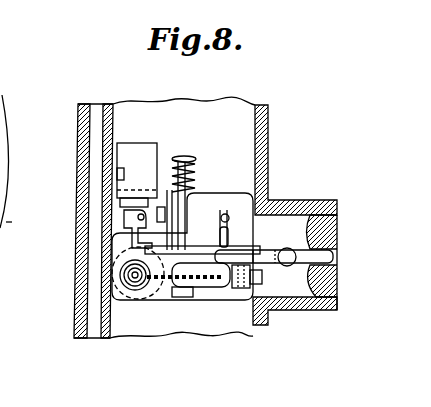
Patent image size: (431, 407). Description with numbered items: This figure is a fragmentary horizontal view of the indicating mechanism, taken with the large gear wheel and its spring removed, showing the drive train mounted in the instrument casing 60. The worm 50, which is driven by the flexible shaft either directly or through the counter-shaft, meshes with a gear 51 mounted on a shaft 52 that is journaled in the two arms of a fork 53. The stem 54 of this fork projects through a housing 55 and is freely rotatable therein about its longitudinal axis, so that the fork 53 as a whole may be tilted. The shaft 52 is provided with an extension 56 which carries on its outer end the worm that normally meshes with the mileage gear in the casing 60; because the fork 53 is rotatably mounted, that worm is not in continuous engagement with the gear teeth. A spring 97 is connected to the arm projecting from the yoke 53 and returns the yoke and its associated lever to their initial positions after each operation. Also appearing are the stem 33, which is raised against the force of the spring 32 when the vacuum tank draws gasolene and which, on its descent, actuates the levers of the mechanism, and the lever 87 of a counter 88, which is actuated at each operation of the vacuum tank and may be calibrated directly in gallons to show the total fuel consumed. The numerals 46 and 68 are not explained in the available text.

The adjacent figure fragment 46 is at (0, 44).
The machine frame wall 68 is at (82, 267).
The instrument casing 60 is at (268, 133).
The spring 32 is at (286, 215).
The stem 54 is at (261, 322).
The spring 97 is at (267, 200).
The counter 88 is at (136, 150).
The lever 87 is at (94, 229).
The worm 50 is at (194, 175).
The gear 51 is at (146, 300).
The extension 56 is at (187, 198).
The stem 33 is at (267, 250).
The shaft 52 is at (205, 285).
The fork 53 is at (242, 300).
The housing 55 is at (263, 278).